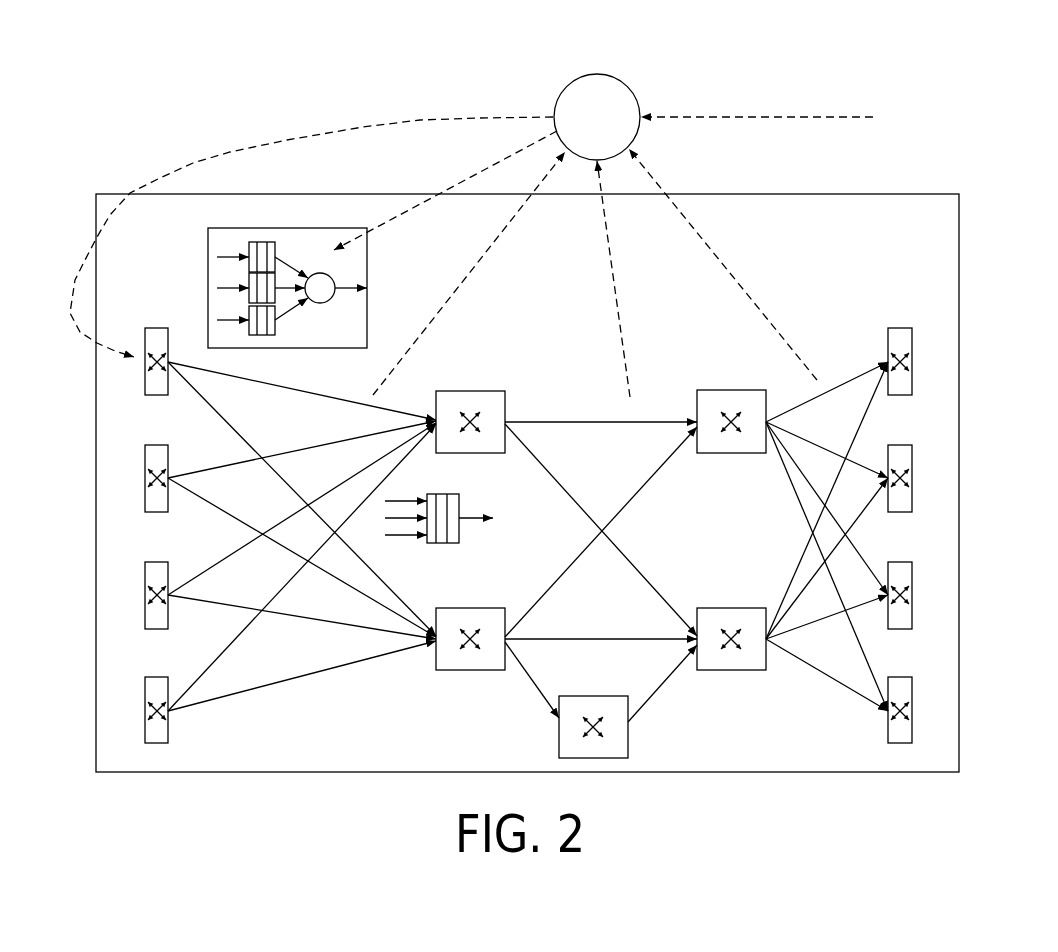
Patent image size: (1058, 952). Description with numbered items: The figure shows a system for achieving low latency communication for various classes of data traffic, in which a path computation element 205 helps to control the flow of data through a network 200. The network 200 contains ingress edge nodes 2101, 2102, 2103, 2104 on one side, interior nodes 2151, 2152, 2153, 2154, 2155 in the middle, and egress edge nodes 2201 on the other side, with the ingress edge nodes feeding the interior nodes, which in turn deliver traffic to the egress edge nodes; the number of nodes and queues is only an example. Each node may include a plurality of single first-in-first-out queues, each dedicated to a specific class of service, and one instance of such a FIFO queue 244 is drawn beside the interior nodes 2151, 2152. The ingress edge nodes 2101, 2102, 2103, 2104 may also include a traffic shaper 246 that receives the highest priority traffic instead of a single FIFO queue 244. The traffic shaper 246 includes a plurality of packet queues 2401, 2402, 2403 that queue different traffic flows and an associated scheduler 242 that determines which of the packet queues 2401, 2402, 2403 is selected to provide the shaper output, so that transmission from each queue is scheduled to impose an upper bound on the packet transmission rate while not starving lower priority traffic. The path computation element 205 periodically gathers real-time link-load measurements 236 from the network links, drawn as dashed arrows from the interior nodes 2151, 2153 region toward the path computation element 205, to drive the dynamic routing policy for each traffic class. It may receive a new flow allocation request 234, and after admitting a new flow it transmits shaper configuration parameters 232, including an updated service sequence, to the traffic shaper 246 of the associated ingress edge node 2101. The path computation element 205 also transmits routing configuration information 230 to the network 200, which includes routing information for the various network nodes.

The network 200 is at (97, 213).
The path computation element (PCE) 205 is at (623, 82).
The ingress edge node 2101 is at (143, 382).
The ingress edge node 2102 is at (143, 498).
The ingress edge node 2103 is at (142, 617).
The ingress edge node 2104 is at (143, 727).
The interior node 2151 is at (481, 391).
The interior node 2152 is at (468, 670).
The interior node 2153 is at (713, 390).
The interior node 2154 is at (628, 735).
The interior node 2155 is at (719, 608).
The egress edge node 2201 is at (919, 790).
The routing configuration information 230 is at (363, 127).
The shaper configuration parameters 232 is at (477, 172).
The new flow allocation request 234 is at (777, 115).
The real-time link-load measurements 236 is at (609, 262).
The packet queue 2401 is at (260, 242).
The packet queue 2402 is at (249, 277).
The packet queue 2403 is at (262, 336).
The scheduler 242 is at (334, 264).
The FIFO queue 244 is at (459, 533).
The traffic shaper 246 is at (367, 332).